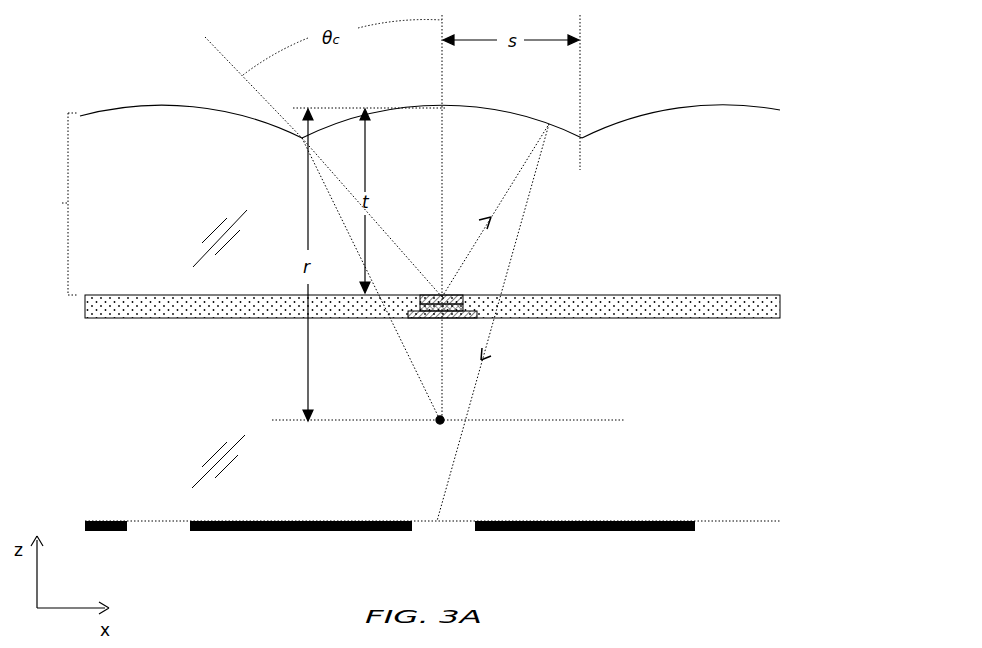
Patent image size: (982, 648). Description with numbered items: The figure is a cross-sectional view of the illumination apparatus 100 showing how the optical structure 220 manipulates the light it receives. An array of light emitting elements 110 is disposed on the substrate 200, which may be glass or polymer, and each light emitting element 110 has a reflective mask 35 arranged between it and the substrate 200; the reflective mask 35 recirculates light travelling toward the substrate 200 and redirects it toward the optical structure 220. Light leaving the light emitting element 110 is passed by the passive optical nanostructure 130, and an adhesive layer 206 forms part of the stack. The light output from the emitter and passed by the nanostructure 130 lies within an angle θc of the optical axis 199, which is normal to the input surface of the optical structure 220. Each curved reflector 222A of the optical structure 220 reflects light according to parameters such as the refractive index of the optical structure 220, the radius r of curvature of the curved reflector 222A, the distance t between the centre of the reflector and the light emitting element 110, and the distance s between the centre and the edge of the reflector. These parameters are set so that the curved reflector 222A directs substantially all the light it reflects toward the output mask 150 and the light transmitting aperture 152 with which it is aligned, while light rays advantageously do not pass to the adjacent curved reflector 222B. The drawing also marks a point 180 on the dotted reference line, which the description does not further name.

The illumination apparatus 100 is at (163, 67).
The adjacent curved reflector 222B is at (112, 108).
The curved reflector 222A is at (556, 126).
The optical structure 220 is at (401, 200).
The adhesive layer 206 is at (82, 312).
The substrate 200 is at (130, 380).
The optical axis 199 is at (442, 65).
The passive optical nanostructure 130 is at (463, 300).
The light emitting element 110 is at (477, 314).
The reflective mask 35 is at (484, 316).
The focal point 180 is at (478, 400).
The light transmitting aperture 152 is at (435, 527).
The output mask 150 is at (560, 527).